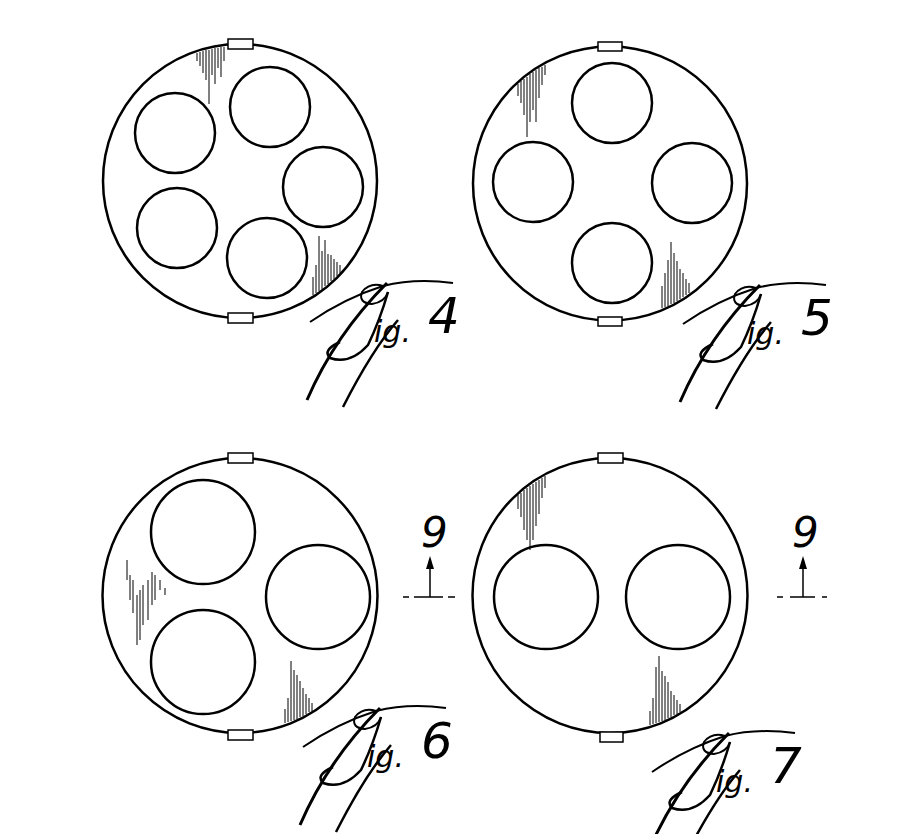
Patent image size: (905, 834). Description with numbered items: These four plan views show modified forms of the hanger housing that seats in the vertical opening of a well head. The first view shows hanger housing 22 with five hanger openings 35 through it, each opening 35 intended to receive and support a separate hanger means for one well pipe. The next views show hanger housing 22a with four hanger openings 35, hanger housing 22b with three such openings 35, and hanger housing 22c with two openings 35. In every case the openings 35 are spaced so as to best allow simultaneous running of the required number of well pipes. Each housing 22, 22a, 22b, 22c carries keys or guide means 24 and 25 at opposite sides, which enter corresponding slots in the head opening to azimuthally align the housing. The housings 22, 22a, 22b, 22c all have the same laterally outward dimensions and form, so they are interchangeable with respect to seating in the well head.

In FIG. 4, the hanger housing 22 is at (104, 205).
In FIG. 5, the hanger housing 22a is at (490, 118).
In FIG. 6, the hanger housing 22b is at (103, 600).
In FIG. 7, the hanger housing 22c is at (537, 478).
In FIG. 4, the key 24 is at (232, 323).
In FIG. 5, the key 24 is at (606, 327).
In FIG. 6, the key 24 is at (238, 741).
In FIG. 7, the key 24 is at (610, 742).
In FIG. 4, the key 25 is at (244, 40).
In FIG. 5, the key 25 is at (612, 42).
In FIG. 6, the key 25 is at (243, 453).
In FIG. 7, the key 25 is at (612, 453).
In FIG. 4, the hanger opening 35 is at (184, 146).
In FIG. 5, the hanger opening 35 is at (546, 194).
In FIG. 6, the hanger opening 35 is at (214, 541).
In FIG. 7, the hanger opening 35 is at (694, 608).